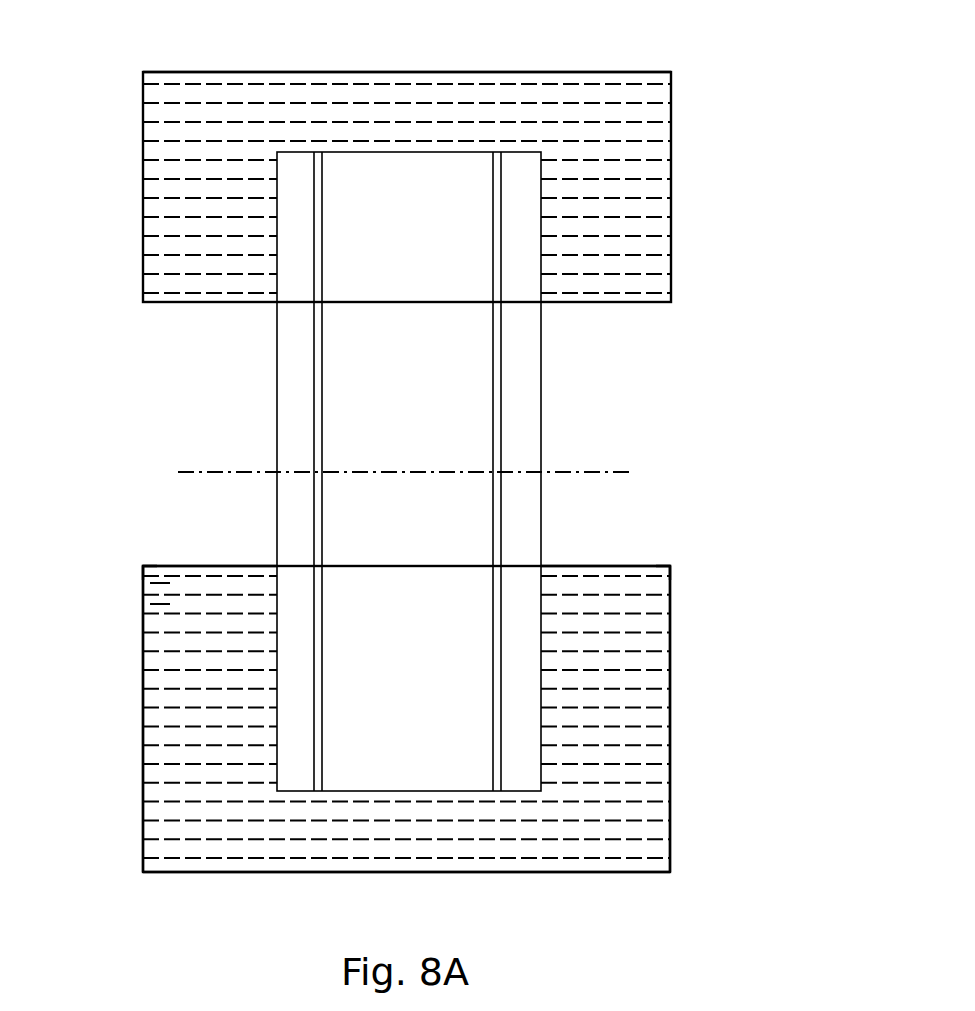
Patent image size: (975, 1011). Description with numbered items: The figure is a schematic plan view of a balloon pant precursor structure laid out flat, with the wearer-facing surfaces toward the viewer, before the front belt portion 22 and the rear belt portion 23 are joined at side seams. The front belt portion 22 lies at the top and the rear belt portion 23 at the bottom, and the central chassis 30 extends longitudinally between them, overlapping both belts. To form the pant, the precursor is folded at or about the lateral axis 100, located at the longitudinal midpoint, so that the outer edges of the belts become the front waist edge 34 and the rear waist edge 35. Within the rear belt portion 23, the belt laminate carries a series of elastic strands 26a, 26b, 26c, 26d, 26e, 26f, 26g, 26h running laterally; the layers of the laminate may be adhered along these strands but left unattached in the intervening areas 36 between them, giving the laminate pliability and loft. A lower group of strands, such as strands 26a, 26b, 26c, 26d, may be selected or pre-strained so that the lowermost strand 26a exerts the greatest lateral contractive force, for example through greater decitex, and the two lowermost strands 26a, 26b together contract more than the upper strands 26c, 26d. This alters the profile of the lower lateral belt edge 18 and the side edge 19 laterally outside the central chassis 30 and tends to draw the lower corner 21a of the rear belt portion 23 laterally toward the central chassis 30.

The lower lateral belt edge 18 is at (210, 565).
The side edge 19 is at (143, 617).
The lower corner 21a is at (143, 566).
The front belt portion 22 is at (660, 135).
The rear belt portion 23 is at (172, 777).
The elastic strand 26a is at (630, 575).
The elastic strand 26b is at (650, 592).
The elastic strand 26c is at (648, 630).
The elastic strand 26d is at (648, 650).
The elastic strand 26e is at (648, 668).
The elastic strand 26f is at (648, 686).
The elastic strand 26g is at (648, 705).
The elastic strand 26h is at (648, 722).
The central chassis 30 is at (243, 393).
The front waist edge 34 is at (395, 72).
The rear waist edge 35 is at (437, 873).
The intervening areas 36 is at (148, 604).
The lateral axis 100 is at (596, 470).